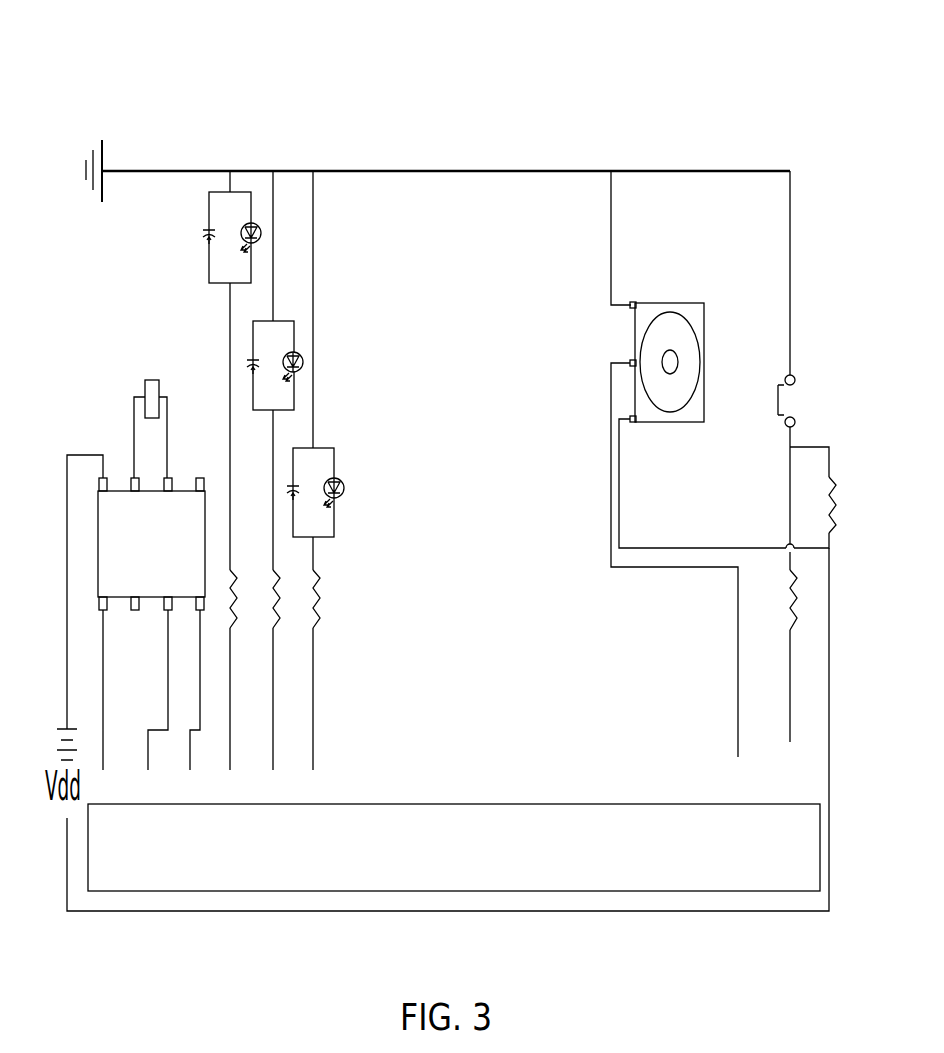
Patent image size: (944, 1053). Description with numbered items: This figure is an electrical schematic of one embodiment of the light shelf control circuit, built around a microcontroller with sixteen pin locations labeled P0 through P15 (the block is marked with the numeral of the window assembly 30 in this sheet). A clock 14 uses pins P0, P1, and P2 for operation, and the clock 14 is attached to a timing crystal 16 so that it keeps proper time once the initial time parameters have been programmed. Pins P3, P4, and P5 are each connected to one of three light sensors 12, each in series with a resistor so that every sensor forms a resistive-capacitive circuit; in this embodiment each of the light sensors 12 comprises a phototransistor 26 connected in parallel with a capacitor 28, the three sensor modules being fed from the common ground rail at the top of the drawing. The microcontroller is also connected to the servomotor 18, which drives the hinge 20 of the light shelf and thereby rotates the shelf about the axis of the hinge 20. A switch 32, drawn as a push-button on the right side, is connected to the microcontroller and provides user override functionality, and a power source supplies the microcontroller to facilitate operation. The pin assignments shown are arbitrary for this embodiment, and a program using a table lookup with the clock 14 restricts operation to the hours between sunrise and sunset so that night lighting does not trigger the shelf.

The light sensors 12 is at (193, 267).
The clock 14 is at (119, 483).
The timing crystal 16 is at (155, 370).
The servomotor 18 is at (665, 292).
The hinge 20 is at (270, 600).
The phototransistor 26 is at (259, 212).
The capacitor 28 is at (203, 230).
The window assembly 30 is at (513, 740).
The switch 32 is at (776, 398).